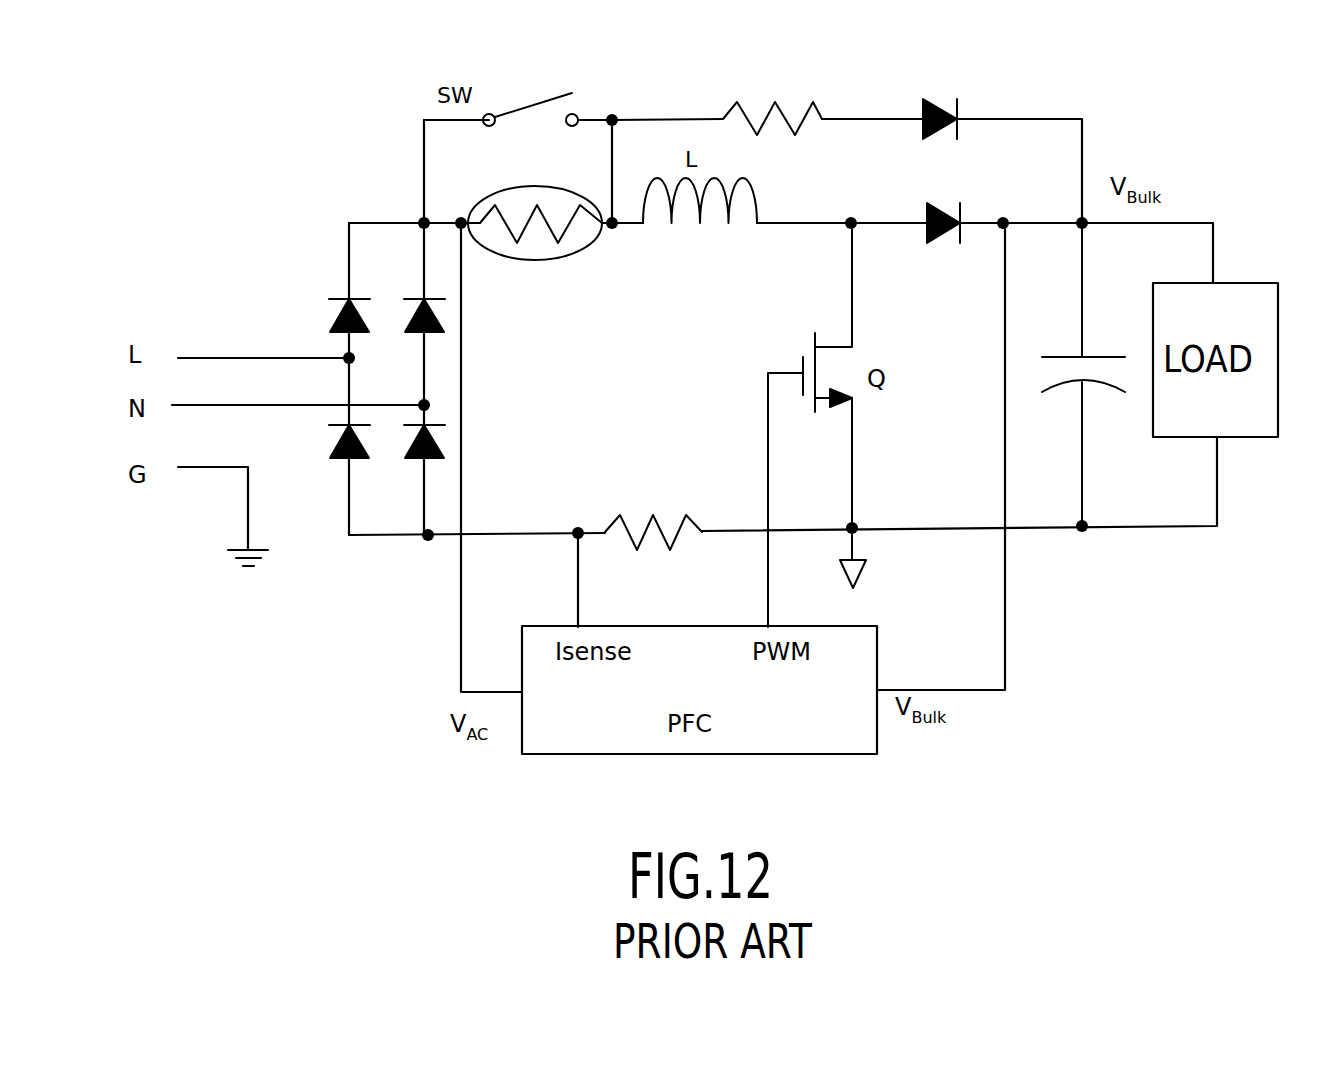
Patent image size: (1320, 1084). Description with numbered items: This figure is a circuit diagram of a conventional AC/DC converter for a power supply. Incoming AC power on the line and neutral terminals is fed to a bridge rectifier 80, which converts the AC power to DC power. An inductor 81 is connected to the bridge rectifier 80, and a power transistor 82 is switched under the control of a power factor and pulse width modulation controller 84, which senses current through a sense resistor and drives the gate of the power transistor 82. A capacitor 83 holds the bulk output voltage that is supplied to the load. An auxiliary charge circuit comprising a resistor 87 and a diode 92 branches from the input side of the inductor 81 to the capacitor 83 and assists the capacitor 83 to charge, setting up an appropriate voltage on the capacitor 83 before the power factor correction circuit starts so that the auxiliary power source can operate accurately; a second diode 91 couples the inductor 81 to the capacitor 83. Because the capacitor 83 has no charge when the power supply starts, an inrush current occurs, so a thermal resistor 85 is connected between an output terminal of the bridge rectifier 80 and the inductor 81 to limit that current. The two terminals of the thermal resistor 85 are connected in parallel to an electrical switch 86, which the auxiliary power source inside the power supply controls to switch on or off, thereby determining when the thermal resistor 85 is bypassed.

The bridge rectifier 80 is at (387, 411).
The inductor 81 is at (700, 229).
The power transistor 82 is at (817, 425).
The capacitor 83 is at (1076, 374).
The power factor and pulse width modulation controller 84 is at (653, 551).
The thermal resistor 85 is at (544, 242).
The electrical switch 86 is at (535, 125).
The resistor R1 87 is at (787, 100).
The diode D1 91 is at (932, 231).
The diode D2 92 is at (944, 96).